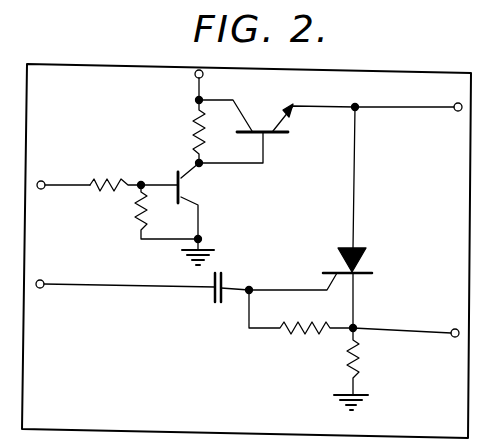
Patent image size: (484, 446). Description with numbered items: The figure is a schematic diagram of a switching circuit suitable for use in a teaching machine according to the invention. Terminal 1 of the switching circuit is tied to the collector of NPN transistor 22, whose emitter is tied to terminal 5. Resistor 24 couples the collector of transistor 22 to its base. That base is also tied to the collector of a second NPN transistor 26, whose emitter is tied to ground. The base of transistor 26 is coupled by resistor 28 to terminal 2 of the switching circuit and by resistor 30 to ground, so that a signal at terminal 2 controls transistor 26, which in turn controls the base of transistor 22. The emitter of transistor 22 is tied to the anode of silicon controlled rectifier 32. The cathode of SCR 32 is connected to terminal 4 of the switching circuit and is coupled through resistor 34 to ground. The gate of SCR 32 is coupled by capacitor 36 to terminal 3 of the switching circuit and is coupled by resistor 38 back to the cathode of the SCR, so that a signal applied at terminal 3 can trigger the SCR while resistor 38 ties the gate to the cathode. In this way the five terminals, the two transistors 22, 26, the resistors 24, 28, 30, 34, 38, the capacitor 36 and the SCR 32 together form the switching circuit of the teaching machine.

The terminal 1 is at (193, 82).
The terminal 2 is at (62, 174).
The terminal 3 is at (39, 274).
The terminal 4 is at (406, 323).
The terminal 5 is at (408, 119).
The NPN transistor 22 is at (268, 134).
The resistor 24 is at (192, 127).
The NPN transistor 26 is at (178, 180).
The resistor 28 is at (112, 195).
The resistor 30 is at (148, 215).
The silicon controlled rectifier 32 is at (357, 250).
The resistor 34 is at (358, 350).
The capacitor 36 is at (215, 298).
The resistor 38 is at (302, 338).